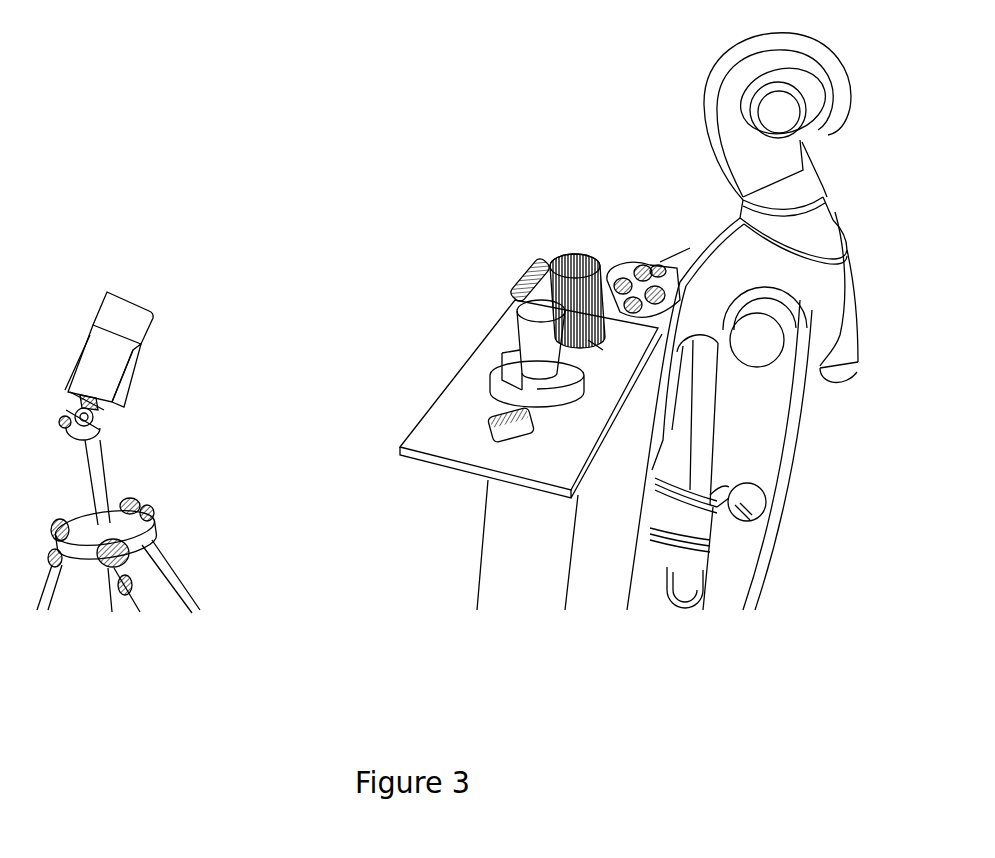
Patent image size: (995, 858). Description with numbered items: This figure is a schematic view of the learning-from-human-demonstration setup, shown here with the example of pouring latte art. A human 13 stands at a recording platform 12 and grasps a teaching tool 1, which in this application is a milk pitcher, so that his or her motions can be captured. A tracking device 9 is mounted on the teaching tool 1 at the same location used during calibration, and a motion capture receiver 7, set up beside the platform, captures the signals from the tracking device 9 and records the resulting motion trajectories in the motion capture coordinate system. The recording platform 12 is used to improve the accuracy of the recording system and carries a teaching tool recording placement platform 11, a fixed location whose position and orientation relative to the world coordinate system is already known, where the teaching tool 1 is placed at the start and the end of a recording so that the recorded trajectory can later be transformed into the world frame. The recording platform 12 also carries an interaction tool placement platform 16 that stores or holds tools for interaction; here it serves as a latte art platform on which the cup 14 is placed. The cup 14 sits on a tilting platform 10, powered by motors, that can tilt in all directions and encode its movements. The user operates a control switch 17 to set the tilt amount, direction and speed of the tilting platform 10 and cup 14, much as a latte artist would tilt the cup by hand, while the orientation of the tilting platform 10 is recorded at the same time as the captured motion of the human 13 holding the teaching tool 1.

The teaching tool 1 is at (567, 262).
The motion capture receiver 7 is at (135, 300).
The tracking device 9 is at (527, 280).
The tilting platform 10 is at (507, 340).
The teaching tool recording placement platform 11 is at (598, 346).
The recording platform 12 is at (400, 449).
The human 13 is at (700, 137).
The cup 14 is at (553, 312).
The interaction tool placement platform 16 is at (495, 363).
The control switch 17 is at (497, 435).